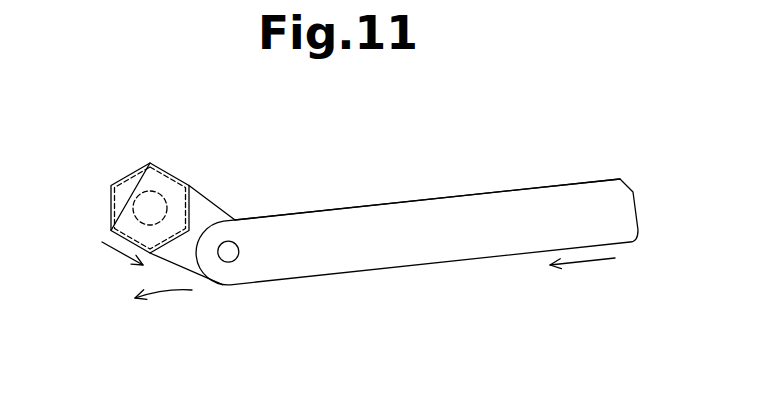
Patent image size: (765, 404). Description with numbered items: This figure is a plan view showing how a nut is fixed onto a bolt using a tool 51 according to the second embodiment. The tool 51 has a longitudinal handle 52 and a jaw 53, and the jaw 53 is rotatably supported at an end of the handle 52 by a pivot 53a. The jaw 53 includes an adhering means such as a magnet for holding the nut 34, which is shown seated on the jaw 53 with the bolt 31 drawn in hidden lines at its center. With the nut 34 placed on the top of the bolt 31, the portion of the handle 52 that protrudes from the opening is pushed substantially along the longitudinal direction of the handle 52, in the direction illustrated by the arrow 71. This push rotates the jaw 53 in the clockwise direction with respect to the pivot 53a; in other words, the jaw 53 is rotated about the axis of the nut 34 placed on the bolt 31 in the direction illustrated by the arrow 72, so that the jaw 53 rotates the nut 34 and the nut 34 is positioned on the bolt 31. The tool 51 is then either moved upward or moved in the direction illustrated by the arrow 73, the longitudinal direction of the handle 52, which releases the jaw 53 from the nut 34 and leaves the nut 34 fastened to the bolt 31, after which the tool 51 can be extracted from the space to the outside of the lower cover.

The bolt 31 is at (112, 210).
The nut 34 is at (128, 182).
The tool 51 is at (355, 192).
The handle 52 is at (528, 198).
The jaw 53 is at (172, 173).
The pivot 53a is at (238, 252).
The arrow 71 is at (582, 263).
The arrow 72 is at (170, 302).
The arrow 73 is at (117, 252).